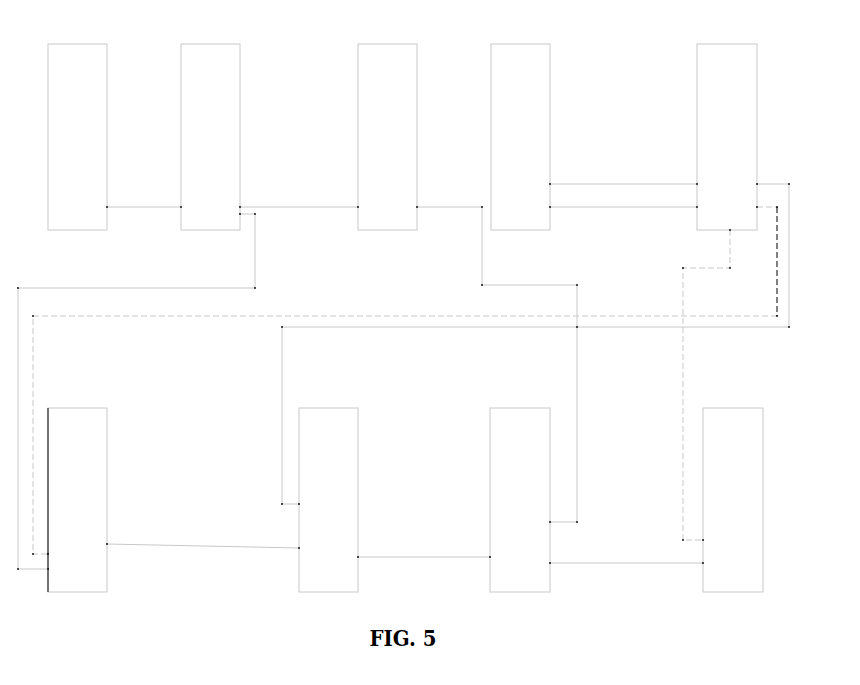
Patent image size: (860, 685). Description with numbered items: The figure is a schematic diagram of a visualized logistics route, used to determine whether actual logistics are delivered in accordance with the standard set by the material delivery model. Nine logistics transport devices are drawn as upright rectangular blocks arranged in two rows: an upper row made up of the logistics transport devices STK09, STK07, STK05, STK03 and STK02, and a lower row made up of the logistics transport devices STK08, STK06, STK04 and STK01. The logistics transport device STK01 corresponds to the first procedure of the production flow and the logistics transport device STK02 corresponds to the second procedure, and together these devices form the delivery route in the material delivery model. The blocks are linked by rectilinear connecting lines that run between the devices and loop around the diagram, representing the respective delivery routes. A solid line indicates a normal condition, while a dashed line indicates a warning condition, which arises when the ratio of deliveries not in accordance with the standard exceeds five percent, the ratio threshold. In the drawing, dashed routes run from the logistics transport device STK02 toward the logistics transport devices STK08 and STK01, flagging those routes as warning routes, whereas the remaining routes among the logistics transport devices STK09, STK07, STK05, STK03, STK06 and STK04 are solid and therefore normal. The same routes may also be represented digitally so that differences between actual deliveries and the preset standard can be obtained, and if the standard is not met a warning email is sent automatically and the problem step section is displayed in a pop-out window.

The logistics transport device STK01 is at (733, 484).
The logistics transport device STK02 is at (727, 123).
The logistics transport device STK03 is at (520, 121).
The logistics transport device STK04 is at (520, 485).
The logistics transport device STK05 is at (387, 122).
The logistics transport device STK06 is at (328, 485).
The logistics transport device STK07 is at (210, 123).
The logistics transport device STK08 is at (77, 487).
The logistics transport device STK09 is at (77, 120).